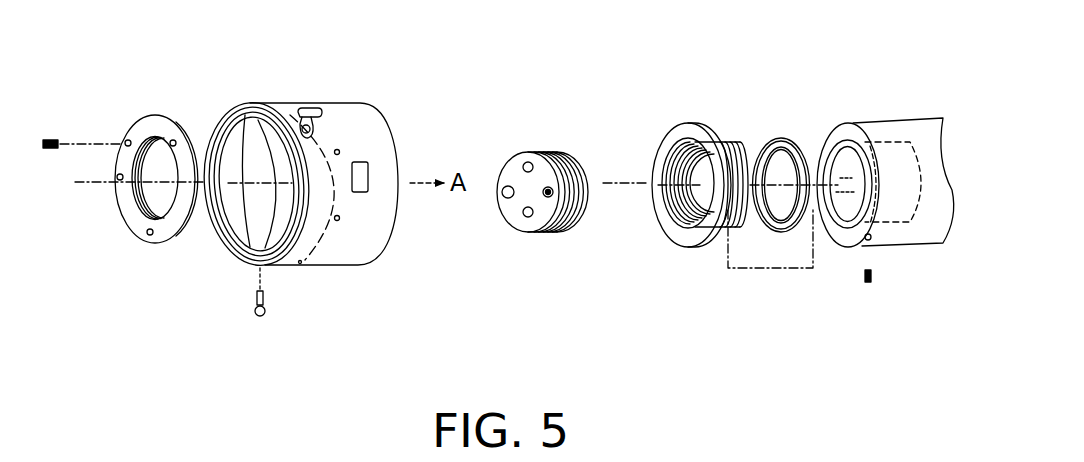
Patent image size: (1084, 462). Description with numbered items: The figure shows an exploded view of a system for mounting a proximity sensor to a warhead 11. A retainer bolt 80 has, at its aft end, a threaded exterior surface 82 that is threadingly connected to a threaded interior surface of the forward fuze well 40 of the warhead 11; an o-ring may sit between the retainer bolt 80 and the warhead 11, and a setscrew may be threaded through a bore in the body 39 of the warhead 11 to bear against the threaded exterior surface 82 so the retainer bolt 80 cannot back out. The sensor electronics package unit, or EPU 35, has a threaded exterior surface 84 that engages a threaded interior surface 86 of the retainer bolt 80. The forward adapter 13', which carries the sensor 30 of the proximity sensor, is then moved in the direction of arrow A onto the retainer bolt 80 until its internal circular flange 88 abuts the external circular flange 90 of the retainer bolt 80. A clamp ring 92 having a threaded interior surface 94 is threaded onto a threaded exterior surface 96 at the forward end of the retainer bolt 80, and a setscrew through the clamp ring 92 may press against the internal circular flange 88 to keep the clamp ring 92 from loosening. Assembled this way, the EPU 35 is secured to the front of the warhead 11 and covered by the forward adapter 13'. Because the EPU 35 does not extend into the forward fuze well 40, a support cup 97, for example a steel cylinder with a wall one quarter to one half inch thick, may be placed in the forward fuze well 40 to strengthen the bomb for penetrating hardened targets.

The warhead 11 is at (888, 171).
The forward adapter 13' is at (303, 199).
The sensor 30 is at (360, 160).
The sensor electronics package unit (EPU) 35 is at (535, 161).
The body 39 is at (888, 197).
The forward fuze well 40 is at (832, 226).
The retainer bolt 80 is at (702, 191).
The threaded exterior surface 82 is at (735, 147).
The threaded exterior surface 84 is at (556, 150).
The threaded interior surface 86 is at (680, 213).
The internal circular flange 88 is at (258, 140).
The external circular flange 90 is at (697, 123).
The clamp ring 92 is at (133, 214).
The threaded interior surface 94 is at (133, 194).
The threaded exterior surface 96 is at (690, 136).
The support cup 97 is at (908, 142).